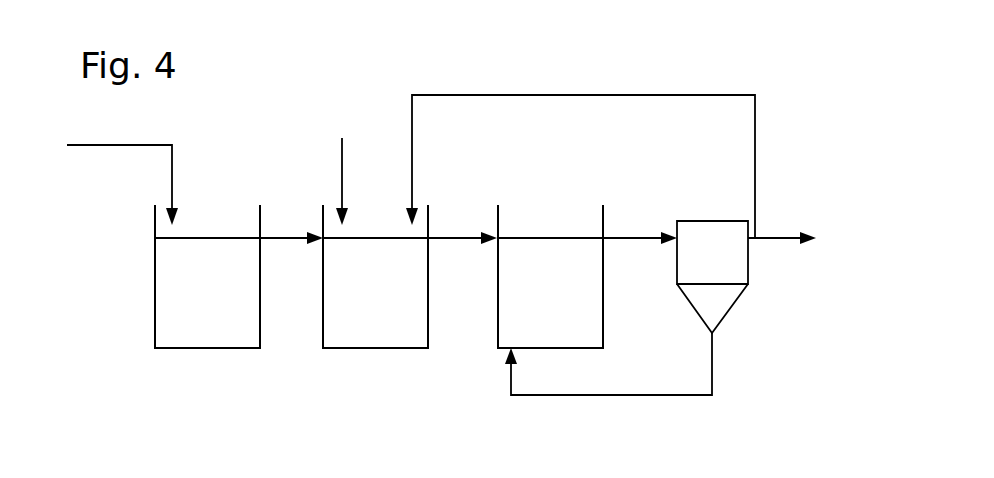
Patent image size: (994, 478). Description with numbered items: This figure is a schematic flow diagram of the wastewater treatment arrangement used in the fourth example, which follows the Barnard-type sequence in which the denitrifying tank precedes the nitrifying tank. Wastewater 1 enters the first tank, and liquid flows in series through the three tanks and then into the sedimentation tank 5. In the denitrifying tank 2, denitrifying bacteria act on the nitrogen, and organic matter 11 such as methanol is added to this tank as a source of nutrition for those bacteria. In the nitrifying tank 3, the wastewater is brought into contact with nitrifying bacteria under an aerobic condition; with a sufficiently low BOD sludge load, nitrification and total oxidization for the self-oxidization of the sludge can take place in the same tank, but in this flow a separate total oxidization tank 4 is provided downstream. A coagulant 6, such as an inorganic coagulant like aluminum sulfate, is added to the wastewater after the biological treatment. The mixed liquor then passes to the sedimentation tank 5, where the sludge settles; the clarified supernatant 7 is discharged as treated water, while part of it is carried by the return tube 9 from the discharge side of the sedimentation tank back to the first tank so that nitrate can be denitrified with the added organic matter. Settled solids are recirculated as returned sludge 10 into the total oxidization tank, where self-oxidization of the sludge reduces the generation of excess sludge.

The wastewater 1 is at (130, 143).
The denitrifying tank 2 is at (410, 348).
The nitrifying tank 3 is at (237, 348).
The total oxidization tank 4 is at (505, 345).
The sedimentation tank 5 is at (752, 283).
The coagulant 6 is at (517, 224).
The membrane filtrate or supernatant 7 is at (763, 233).
The return tube for the membrane filtrate or supernatant 9 is at (445, 95).
The returned sludge 10 is at (608, 364).
The organic matter 11 is at (341, 169).